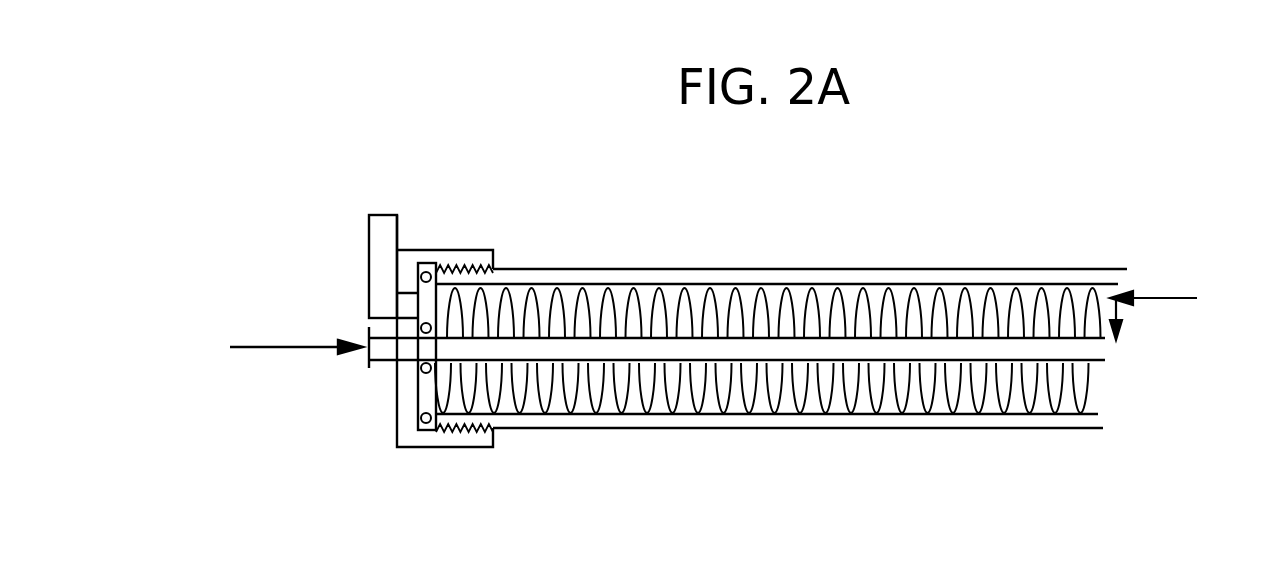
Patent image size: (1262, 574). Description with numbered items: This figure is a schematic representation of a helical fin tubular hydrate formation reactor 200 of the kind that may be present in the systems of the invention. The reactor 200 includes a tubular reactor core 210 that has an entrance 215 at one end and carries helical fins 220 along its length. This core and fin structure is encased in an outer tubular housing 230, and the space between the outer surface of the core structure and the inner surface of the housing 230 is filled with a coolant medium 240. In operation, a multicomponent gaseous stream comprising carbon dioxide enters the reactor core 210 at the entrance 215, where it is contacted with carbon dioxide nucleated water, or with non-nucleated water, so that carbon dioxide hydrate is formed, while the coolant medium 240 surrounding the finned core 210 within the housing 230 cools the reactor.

The reactor 200 is at (338, 165).
The tubular reactor core 210 is at (1105, 353).
The entrance 215 is at (282, 347).
The helical fins 220 is at (537, 295).
The outer tubular housing 230 is at (1040, 280).
The coolant medium 240 is at (1163, 297).